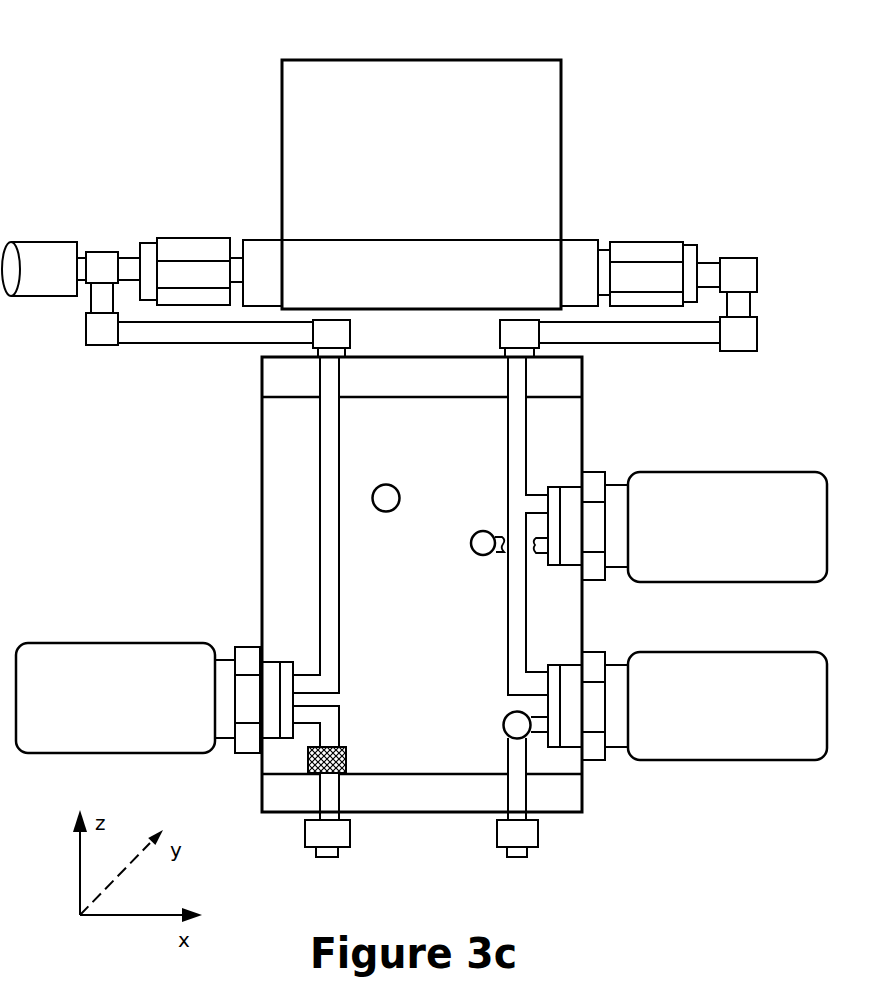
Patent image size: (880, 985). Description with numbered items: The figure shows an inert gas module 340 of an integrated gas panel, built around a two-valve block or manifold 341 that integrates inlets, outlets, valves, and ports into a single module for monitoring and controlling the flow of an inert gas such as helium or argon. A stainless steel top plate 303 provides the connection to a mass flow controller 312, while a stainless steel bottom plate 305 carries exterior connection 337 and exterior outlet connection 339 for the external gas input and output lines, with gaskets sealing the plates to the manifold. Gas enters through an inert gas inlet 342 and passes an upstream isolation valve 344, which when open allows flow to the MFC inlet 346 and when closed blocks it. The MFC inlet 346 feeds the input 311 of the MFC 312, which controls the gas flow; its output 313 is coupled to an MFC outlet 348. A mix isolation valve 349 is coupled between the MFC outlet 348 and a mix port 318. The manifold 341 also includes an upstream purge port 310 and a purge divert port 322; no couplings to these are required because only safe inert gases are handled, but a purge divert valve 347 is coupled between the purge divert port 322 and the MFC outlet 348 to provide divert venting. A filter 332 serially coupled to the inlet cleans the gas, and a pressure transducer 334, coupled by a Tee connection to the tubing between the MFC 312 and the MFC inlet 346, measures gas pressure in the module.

The top plate 303 is at (274, 374).
The bottom plate 305 is at (568, 788).
The upstream purge port 310 is at (396, 490).
The input of the mass flow controller 311 is at (250, 267).
The mass flow controller 312 is at (421, 184).
The output of the mass flow controller 313 is at (592, 270).
The mix port 318 is at (512, 723).
The purge divert port 322 is at (478, 548).
The filter 332 is at (346, 763).
The pressure transducer 334 is at (47, 260).
The exterior input connection 337 is at (320, 828).
The exterior outlet connection 339 is at (525, 833).
The inert gas module 340 is at (156, 58).
The manifold 341 is at (274, 478).
The inert gas inlet 342 is at (328, 727).
The upstream isolation valve 344 is at (154, 698).
The MFC inlet 346 is at (328, 585).
The purge divert valve 347 is at (687, 527).
The MFC outlet 348 is at (519, 425).
The mix isolation valve 349 is at (687, 706).